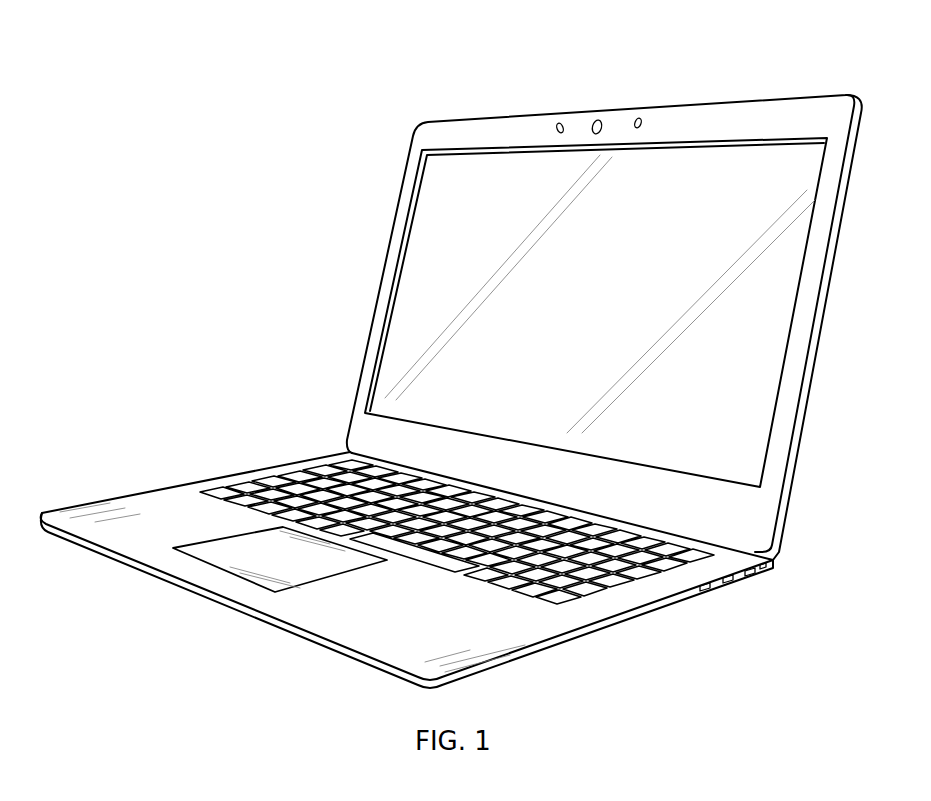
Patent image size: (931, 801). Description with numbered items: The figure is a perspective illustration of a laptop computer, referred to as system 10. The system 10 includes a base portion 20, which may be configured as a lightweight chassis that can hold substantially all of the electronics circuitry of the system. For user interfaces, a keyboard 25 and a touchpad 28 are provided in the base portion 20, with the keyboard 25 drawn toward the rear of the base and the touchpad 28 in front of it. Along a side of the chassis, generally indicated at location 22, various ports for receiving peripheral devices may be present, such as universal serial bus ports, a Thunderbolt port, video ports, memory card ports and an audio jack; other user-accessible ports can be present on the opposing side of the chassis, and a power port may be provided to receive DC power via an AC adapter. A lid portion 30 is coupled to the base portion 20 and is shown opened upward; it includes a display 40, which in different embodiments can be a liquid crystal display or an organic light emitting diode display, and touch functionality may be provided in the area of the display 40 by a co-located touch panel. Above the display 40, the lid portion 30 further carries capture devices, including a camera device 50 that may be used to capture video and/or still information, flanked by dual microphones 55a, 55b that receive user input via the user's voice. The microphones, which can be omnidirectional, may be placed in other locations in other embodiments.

The system 10 is at (428, 57).
The base portion 20 is at (200, 485).
The location of ports 22 is at (735, 583).
The keyboard 25 is at (265, 488).
The touchpad 28 is at (275, 566).
The lid portion 30 is at (380, 288).
The display 40 is at (595, 306).
The camera device 50 is at (599, 119).
The microphone 55a is at (557, 122).
The microphone 55b is at (640, 117).